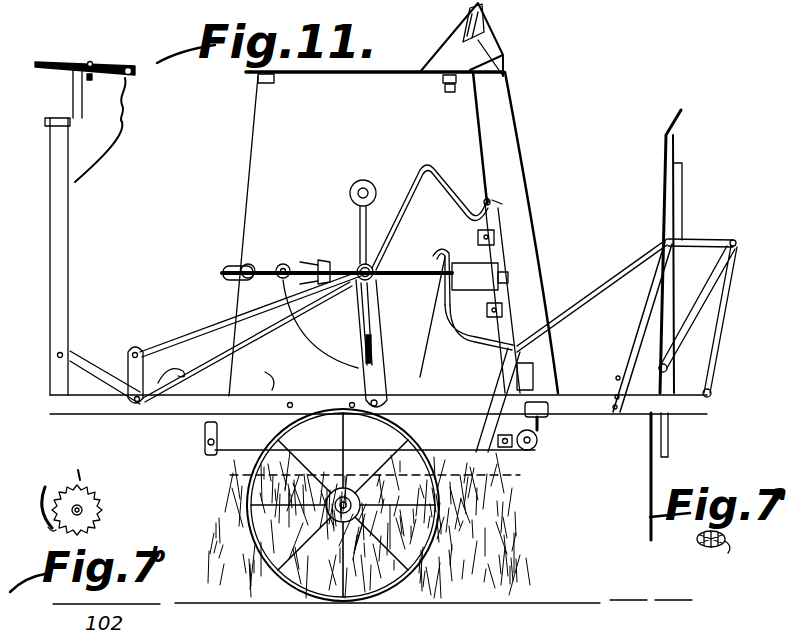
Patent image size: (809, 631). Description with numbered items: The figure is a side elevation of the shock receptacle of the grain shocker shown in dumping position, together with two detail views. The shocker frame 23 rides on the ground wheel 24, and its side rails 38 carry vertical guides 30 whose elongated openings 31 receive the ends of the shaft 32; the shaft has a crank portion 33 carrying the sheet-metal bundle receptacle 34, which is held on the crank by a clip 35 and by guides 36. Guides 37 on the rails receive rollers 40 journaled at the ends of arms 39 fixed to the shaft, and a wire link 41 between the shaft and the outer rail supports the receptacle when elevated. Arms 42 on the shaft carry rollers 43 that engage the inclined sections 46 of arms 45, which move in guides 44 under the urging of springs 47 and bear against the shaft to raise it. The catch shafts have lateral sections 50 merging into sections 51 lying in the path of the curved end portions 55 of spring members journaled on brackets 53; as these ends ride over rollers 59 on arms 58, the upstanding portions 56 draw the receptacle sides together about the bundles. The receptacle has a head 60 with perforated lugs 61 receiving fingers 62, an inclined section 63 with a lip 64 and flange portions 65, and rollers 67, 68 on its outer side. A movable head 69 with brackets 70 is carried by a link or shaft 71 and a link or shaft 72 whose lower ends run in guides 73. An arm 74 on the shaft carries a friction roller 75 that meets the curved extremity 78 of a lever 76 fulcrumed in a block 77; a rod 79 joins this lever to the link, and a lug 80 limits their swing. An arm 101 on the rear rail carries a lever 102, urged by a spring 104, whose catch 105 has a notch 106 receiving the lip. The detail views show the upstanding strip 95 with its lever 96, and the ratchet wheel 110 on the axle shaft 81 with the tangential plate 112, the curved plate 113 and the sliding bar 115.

In FIG. 11, the frame 23 is at (573, 462).
In FIG. 11, the ground wheel 24 is at (283, 557).
In FIG. 11, the vertically disposed guides 30 is at (358, 323).
In FIG. 11, the elongated openings 31 is at (364, 378).
In FIG. 11, the shaft 32 is at (362, 266).
In FIG. 11, the crank portion 33 is at (240, 262).
In FIG. 11, the bundle receptacle 34 is at (266, 236).
In FIG. 11, the clip 35 is at (230, 275).
In FIG. 11, the guides 36 is at (314, 265).
In FIG. 11, the guides 37 is at (272, 390).
In FIG. 11, the side rails 38 is at (192, 412).
In FIG. 11, the arms 39 is at (275, 262).
In FIG. 11, the rollers 40 is at (245, 290).
In FIG. 11, the wire link 41 is at (170, 332).
In FIG. 11, the arms 42 is at (352, 198).
In FIG. 11, the rollers 43 is at (363, 180).
In FIG. 11, the guides 44 is at (510, 243).
In FIG. 11, the arms 45 is at (200, 360).
In FIG. 11, the inclined sections 46 is at (430, 209).
In FIG. 11, the springs 47 is at (134, 348).
In FIG. 11, the laterally disposed sections 50 is at (505, 368).
In FIG. 11, the sections 51 is at (463, 333).
In FIG. 11, the brackets 53 is at (373, 310).
In FIG. 11, the curved end portions 55 is at (469, 378).
In FIG. 11, the upstanding portions 56 is at (387, 263).
In FIG. 11, the arms 58 is at (510, 307).
In FIG. 11, the rollers 59 is at (482, 272).
In FIG. 11, the head 60 is at (328, 73).
In FIG. 11, the perforated lugs 61 is at (445, 75).
In FIG. 11, the fingers 62 is at (445, 97).
In FIG. 11, the inclined section 63 is at (461, 39).
In FIG. 11, the lip 64 is at (487, 17).
In FIG. 11, the flange portions 65 is at (497, 70).
In FIG. 11, the roller 67 is at (533, 447).
In FIG. 11, the roller 68 is at (207, 450).
In FIG. 11, the movable head 69 is at (666, 200).
In FIG. 11, the brackets 70 is at (703, 233).
In FIG. 11, the link or shaft 71 is at (723, 316).
In FIG. 11, the link or shaft 72 is at (645, 312).
In FIG. 11, the vertically disposed guides 73 is at (620, 383).
In FIG. 11, the arm 74 is at (330, 263).
In FIG. 11, the friction roller 75 is at (290, 318).
In FIG. 11, the lever 76 is at (470, 323).
In FIG. 11, the block 77 is at (497, 402).
In FIG. 11, the curved extremity 78 is at (440, 257).
In FIG. 11, the rod 79 is at (630, 267).
In FIG. 11, the lug 80 is at (587, 297).
In FIG. 7b, the axle shaft 81 is at (82, 512).
In FIG. 7a, the upstanding strip 95 is at (728, 553).
In FIG. 7a, the lever 96 is at (725, 530).
In FIG. 11, the arm 101 is at (74, 88).
In FIG. 11, the lever 102 is at (72, 66).
In FIG. 11, the spring 104 is at (92, 80).
In FIG. 11, the catch 105 is at (130, 90).
In FIG. 11, the notch 106 is at (127, 120).
In FIG. 7b, the ratchet wheel 110 is at (88, 507).
In FIG. 7b, the plate 112 is at (84, 466).
In FIG. 7b, the curved plate 113 is at (50, 492).
In FIG. 7b, the bar 115 is at (52, 529).